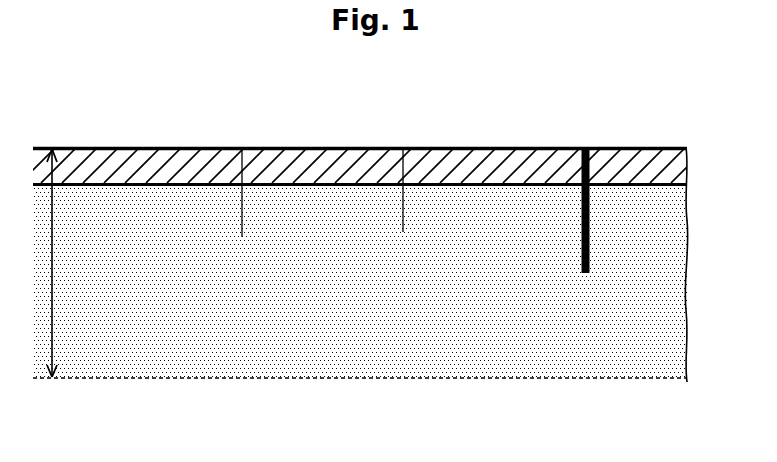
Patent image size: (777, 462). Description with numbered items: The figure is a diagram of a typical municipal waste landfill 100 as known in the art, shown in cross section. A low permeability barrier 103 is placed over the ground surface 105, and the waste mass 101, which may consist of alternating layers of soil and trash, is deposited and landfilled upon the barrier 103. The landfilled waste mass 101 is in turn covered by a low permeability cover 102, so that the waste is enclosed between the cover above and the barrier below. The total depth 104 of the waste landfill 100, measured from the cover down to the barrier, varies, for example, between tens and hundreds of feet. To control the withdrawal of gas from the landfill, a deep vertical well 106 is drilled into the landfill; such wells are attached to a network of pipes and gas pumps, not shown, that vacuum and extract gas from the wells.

The waste landfill 100 is at (360, 232).
The waste mass 101 is at (242, 316).
The low permeability cover 102 is at (273, 160).
The low permeability barrier 103 is at (520, 378).
The total depth 104 is at (79, 263).
The ground surface 105 is at (303, 405).
The well 106 is at (580, 147).